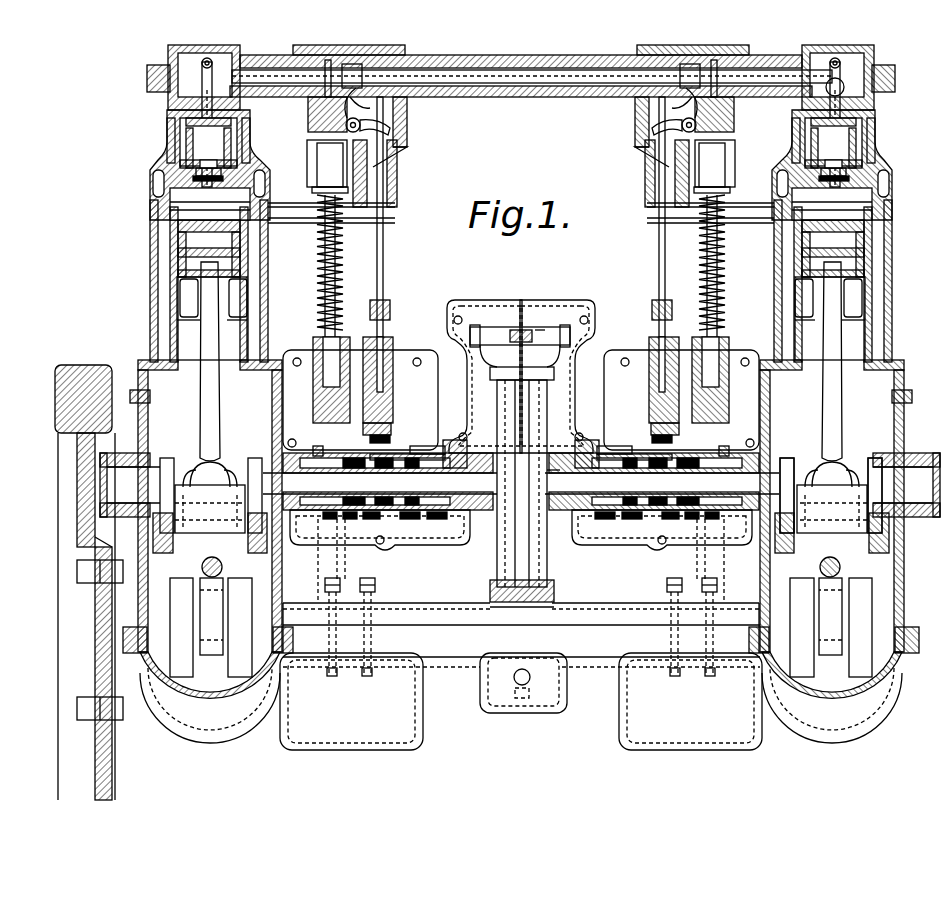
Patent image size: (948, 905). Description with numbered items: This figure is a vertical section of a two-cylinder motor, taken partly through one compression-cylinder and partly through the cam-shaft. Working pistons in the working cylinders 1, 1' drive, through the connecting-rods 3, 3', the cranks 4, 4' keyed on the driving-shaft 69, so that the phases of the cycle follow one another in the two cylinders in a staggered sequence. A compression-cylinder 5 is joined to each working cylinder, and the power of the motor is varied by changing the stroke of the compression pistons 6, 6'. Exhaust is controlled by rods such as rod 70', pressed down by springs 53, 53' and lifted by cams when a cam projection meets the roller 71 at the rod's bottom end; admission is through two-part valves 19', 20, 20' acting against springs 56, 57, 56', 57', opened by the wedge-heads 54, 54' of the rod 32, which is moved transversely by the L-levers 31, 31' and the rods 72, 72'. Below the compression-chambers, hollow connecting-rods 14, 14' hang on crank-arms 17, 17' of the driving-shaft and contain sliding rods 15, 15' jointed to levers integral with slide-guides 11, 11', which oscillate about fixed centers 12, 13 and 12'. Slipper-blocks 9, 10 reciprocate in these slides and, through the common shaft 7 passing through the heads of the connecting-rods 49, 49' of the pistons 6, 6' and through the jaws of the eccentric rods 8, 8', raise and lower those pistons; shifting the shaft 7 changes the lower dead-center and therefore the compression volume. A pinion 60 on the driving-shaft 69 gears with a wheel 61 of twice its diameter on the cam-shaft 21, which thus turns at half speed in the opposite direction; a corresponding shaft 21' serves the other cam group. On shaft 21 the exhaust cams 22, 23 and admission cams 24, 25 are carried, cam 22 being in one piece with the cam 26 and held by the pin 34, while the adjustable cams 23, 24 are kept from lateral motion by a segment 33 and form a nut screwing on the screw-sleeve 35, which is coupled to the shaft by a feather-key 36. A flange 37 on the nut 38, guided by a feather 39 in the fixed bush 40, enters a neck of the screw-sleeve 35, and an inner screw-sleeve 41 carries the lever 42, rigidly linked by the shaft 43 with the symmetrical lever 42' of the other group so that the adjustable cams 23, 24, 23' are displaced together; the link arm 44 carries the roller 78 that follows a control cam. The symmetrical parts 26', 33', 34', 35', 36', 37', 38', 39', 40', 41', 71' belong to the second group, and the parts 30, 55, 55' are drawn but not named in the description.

The working cylinder 1 is at (280, 426).
The working cylinder 1' is at (761, 426).
The connecting-rod 3 is at (326, 559).
The connecting-rod 3' is at (712, 559).
The crank 4 is at (345, 632).
The crank 4' is at (681, 632).
The compression-cylinder 5 is at (210, 207).
The compression piston 6 is at (212, 290).
The compression piston 6' is at (807, 288).
The common shaft 7 is at (210, 511).
The eccentric rod 8 is at (210, 503).
The eccentric rod 8' is at (832, 497).
The slipper-block 9 is at (170, 534).
The slipper-block 10 is at (788, 470).
The slide-guide 11 is at (212, 547).
The slide-guide 11' is at (832, 535).
The fixed center 12 is at (276, 582).
The fixed center 12' is at (742, 485).
The fixed center 13 is at (293, 478).
The hollow connecting-rod 14 is at (197, 606).
The hollow connecting-rod 14' is at (817, 609).
The slide rod 15 is at (224, 567).
The slide rod 15' is at (848, 567).
The crank-arm 17 is at (211, 627).
The crank-arm 17' is at (831, 627).
The admission valve part 19' is at (854, 200).
The admission valve part 20 is at (227, 163).
The admission valve part 20' is at (814, 154).
The cam-shaft 21 is at (411, 481).
The bearing 21' is at (637, 481).
The exhaust cam 22 is at (328, 520).
The adjustable exhaust cam 23 is at (336, 549).
The adjustable exhaust cam 23' is at (685, 549).
The adjustable admission cam 24 is at (370, 525).
The admission cam 25 is at (405, 452).
The fifth cam 26 is at (380, 534).
The housing 26' is at (662, 531).
The cam 30 is at (370, 442).
The L-lever 31 is at (370, 111).
The L-lever 31' is at (674, 111).
The admission rod 32 is at (525, 85).
The segment 33 is at (349, 525).
The collar 33' is at (696, 527).
The pin 34 is at (310, 444).
The pin 34' is at (729, 447).
The screw-sleeve 35 is at (382, 481).
The bearing 35' is at (656, 508).
The feather-key 36 is at (350, 481).
The bearing 36' is at (682, 481).
The flange 37 is at (409, 524).
The sleeve 37' is at (631, 528).
The nut 38 is at (437, 524).
The sleeve 38' is at (601, 528).
The feather 39 is at (433, 433).
The lever 39' is at (614, 427).
The fixed bush 40 is at (452, 454).
The block 40' is at (590, 434).
The screw-sleeve 41 is at (512, 487).
The central rod 41' is at (581, 480).
The lever 42 is at (477, 376).
The lever 42' is at (565, 376).
The shaft 43 is at (543, 330).
The link arm 44 is at (520, 327).
The connecting-rod 49 is at (198, 325).
The connecting-rod 49' is at (847, 361).
The spring 53 is at (337, 198).
The spring 53' is at (723, 198).
The wedge-head 54 is at (521, 102).
The wedge-head 54' is at (852, 77).
The valve stem 55 is at (213, 106).
The valve stem 55' is at (848, 105).
The spring 56 is at (230, 143).
The spring 56' is at (863, 143).
The spring 57 is at (190, 140).
The spring 57' is at (854, 140).
The pinion 60 is at (511, 700).
The wheel 61 is at (576, 604).
The driving-shaft 69 is at (521, 646).
The exhaust rod 70' is at (710, 380).
The roller 71 is at (368, 426).
The cap 71' is at (703, 427).
The rod 72 is at (397, 260).
The rod 72' is at (660, 260).
The roller 78 is at (322, 400).